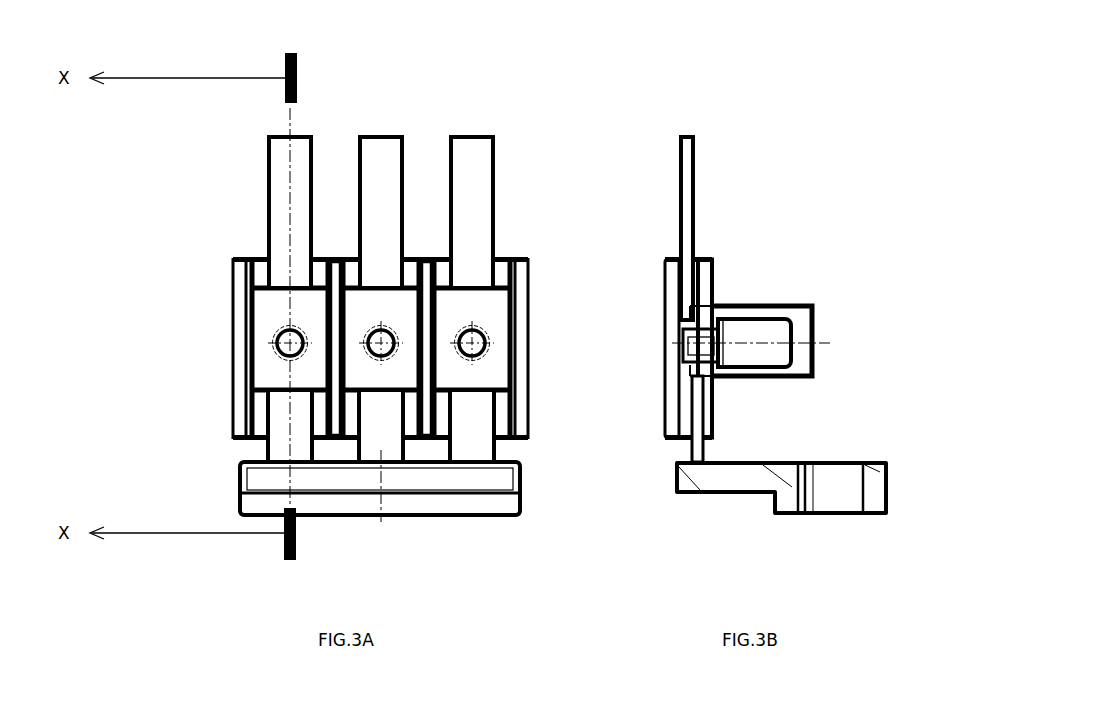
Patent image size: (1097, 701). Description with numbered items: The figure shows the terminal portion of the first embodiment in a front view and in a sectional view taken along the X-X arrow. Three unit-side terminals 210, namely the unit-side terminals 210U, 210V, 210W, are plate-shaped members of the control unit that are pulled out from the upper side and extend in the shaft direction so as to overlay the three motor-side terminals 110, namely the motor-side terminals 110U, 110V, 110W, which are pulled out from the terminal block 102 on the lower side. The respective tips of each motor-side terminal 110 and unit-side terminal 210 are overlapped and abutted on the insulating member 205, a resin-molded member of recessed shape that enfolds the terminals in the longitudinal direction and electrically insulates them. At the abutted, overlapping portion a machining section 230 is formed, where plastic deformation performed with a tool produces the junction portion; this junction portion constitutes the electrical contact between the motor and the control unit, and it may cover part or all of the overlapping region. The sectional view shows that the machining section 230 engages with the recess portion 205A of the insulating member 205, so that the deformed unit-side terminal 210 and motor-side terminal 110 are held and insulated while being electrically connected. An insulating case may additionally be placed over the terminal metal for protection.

In FIG. 3A, the terminal block 102 is at (470, 518).
In FIG. 3B, the terminal block 102 is at (888, 488).
In FIG. 3A, the motor-side terminals 110 is at (389, 498).
In FIG. 3B, the motor-side terminals 110 is at (707, 453).
In FIG. 3A, the motor-side terminal (U phase) 110U is at (275, 427).
In FIG. 3A, the motor-side terminal (V phase) 110V is at (390, 442).
In FIG. 3A, the motor-side terminal (W phase) 110W is at (480, 441).
In FIG. 3A, the insulating member 205 is at (245, 258).
In FIG. 3B, the insulating member 205 is at (661, 280).
In FIG. 3B, the recess portion (cylindrical portion) 205A is at (792, 300).
In FIG. 3A, the unit-side terminals 210 is at (436, 175).
In FIG. 3B, the unit-side terminals 210 is at (690, 165).
In FIG. 3A, the unit-side terminal (U phase) 210U is at (295, 148).
In FIG. 3A, the unit-side terminal (V phase) 210V is at (376, 137).
In FIG. 3A, the unit-side terminal (W phase) 210W is at (483, 175).
In FIG. 3A, the machining section 230 is at (274, 340).
In FIG. 3B, the machining section 230 is at (700, 364).